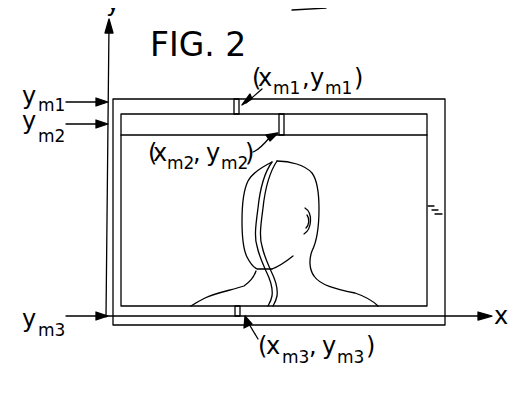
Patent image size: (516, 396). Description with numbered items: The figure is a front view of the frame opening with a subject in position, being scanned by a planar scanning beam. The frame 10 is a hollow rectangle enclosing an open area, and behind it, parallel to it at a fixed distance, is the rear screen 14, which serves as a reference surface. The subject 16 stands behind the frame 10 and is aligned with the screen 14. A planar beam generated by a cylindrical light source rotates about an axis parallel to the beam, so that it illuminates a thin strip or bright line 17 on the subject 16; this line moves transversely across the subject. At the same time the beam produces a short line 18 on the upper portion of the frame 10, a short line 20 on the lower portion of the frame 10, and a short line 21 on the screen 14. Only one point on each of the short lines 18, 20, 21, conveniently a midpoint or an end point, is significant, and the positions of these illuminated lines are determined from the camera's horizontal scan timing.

The frame 10 is at (437, 163).
The rear screen 14 is at (403, 135).
The subject 16 is at (313, 198).
The bright line 17 is at (262, 208).
The short line 18 is at (234, 101).
The short line 20 is at (237, 318).
The short line 21 is at (285, 128).